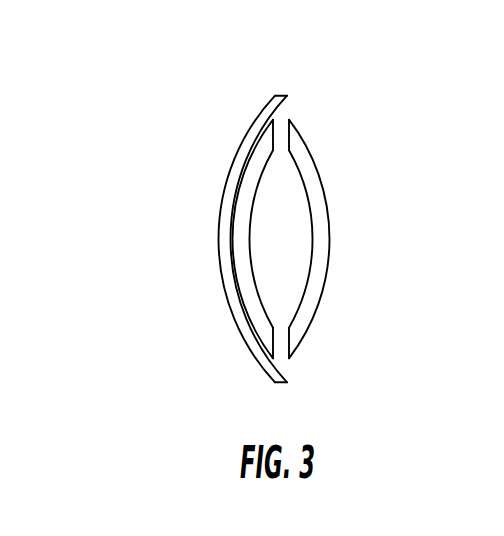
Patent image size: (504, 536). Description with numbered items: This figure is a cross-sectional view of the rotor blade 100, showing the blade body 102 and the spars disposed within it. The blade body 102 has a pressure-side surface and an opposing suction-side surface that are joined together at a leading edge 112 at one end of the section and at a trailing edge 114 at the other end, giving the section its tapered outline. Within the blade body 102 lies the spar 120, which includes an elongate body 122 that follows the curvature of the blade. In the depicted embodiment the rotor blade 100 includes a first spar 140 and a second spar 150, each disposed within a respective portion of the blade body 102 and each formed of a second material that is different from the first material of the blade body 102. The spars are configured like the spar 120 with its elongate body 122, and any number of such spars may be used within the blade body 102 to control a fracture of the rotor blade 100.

The rotor blade 100 is at (377, 82).
The blade body 102 is at (258, 363).
The leading edge 112 is at (301, 368).
The trailing edge 114 is at (262, 118).
The spar 120 is at (281, 239).
The elongate body 122 is at (243, 302).
The first spar 140 is at (235, 247).
The second spar 150 is at (327, 247).